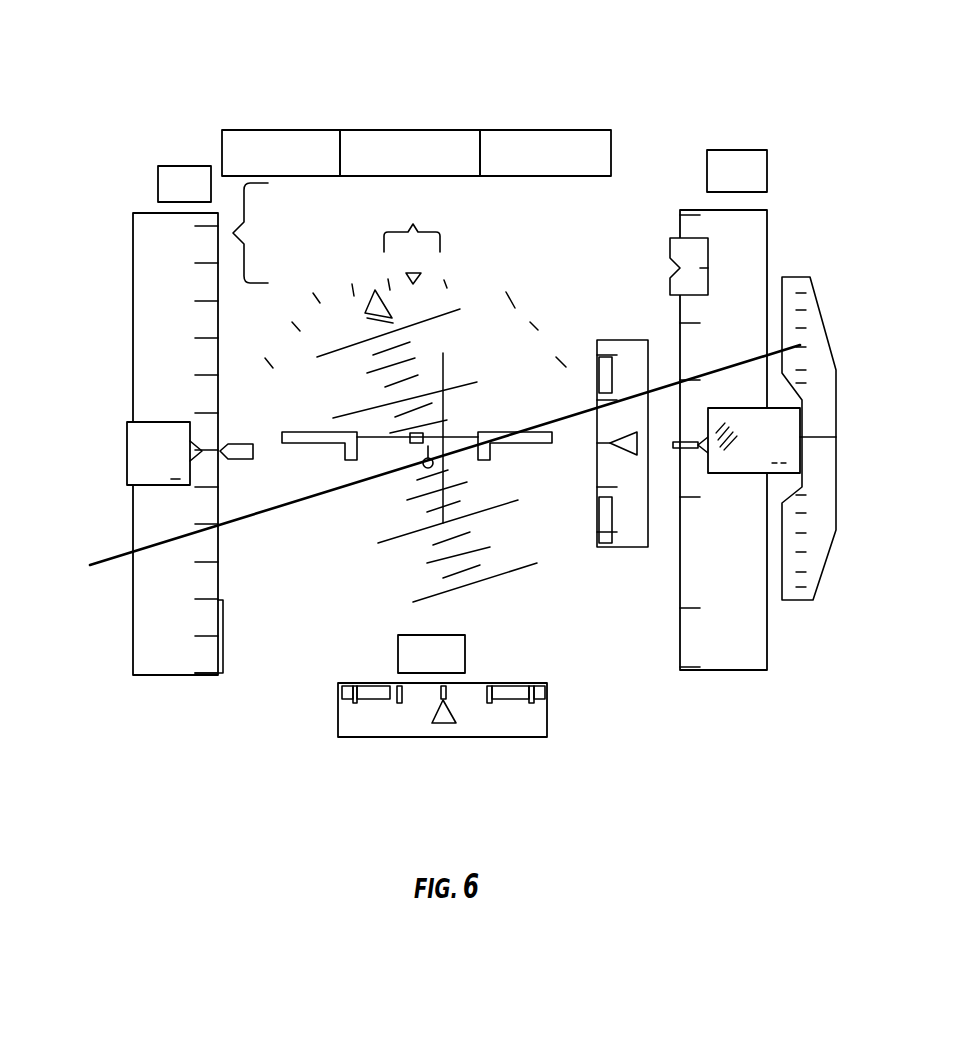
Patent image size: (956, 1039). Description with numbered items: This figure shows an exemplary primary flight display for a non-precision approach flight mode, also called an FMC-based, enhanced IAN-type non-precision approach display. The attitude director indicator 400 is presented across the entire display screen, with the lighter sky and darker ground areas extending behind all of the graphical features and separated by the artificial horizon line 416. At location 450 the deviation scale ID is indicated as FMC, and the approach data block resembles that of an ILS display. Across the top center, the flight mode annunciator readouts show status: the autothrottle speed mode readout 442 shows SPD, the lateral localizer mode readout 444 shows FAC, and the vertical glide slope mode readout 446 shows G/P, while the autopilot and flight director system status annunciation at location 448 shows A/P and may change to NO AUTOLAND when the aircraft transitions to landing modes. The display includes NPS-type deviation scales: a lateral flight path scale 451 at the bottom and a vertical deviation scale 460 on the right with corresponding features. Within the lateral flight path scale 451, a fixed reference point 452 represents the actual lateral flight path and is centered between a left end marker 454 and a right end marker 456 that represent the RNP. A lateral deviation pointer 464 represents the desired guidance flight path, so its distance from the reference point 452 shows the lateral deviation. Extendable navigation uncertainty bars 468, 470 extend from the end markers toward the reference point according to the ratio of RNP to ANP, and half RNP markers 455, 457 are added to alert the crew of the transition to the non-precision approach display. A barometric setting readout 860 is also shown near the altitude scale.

The attitude director indicator 400 is at (778, 118).
The autothrottle speed mode readout 442 is at (298, 128).
The lateral localizer mode readout 444 is at (420, 128).
The vertical glide slope mode readout 446 is at (550, 128).
The autopilot/flight director system status annunciation location 448 is at (413, 224).
The deviation scale ID location 450 is at (233, 233).
The artificial horizon line 416 is at (300, 502).
The vertical deviation scale 460 is at (648, 340).
The barometric setting display 860 is at (663, 669).
The lateral flight path scale 451 is at (338, 715).
The left end marker 454 is at (352, 705).
The extendable navigation uncertainty bar 468 is at (377, 694).
The ½ RNP marker 455 is at (400, 703).
The fixed reference point 452 is at (443, 702).
The lateral deviation pointer 464 is at (447, 721).
The ½ RNP marker 457 is at (490, 703).
The extendable navigation uncertainty bar 470 is at (513, 695).
The right end marker 456 is at (545, 706).